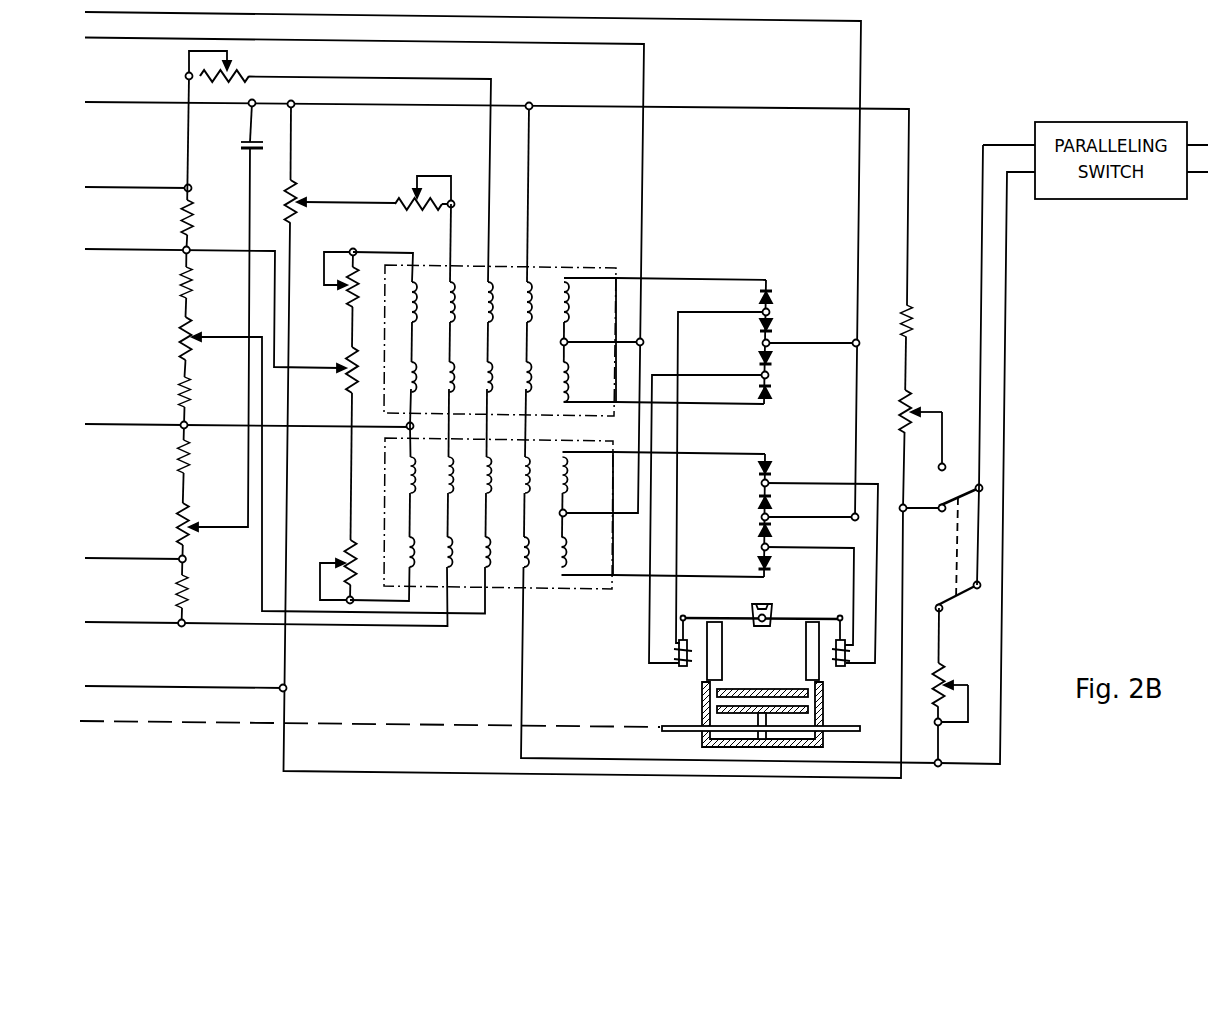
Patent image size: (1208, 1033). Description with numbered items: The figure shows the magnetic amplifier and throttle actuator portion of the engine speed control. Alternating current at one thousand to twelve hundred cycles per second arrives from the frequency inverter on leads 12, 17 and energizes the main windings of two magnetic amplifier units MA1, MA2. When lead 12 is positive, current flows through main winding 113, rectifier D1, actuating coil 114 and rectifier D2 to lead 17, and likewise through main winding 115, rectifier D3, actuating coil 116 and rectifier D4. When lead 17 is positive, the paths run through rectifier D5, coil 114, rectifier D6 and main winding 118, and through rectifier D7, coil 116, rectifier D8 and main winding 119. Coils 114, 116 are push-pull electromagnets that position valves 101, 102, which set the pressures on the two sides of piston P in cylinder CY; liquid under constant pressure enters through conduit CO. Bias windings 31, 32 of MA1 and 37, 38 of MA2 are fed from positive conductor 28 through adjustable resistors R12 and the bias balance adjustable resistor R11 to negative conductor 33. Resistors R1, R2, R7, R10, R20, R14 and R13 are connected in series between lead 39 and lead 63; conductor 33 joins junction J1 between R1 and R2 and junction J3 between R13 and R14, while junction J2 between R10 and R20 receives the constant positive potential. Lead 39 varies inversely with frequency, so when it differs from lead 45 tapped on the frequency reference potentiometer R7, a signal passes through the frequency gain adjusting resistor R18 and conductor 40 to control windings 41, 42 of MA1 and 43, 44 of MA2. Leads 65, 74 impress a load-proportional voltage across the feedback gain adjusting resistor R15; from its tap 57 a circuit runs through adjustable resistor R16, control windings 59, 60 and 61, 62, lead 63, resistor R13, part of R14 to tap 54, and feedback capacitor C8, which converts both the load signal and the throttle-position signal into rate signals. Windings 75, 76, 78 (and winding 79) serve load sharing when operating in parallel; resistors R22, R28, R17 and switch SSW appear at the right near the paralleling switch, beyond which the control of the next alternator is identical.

The lead 17 is at (106, 14).
The lead 12 is at (106, 40).
The lead 65 is at (100, 102).
The conductor 40 is at (298, 78).
The lead 39 is at (100, 188).
The negative conductor 33 is at (100, 250).
The positive conductor 28 is at (95, 425).
The lead 63 is at (95, 623).
The lead 74 is at (95, 688).
The lead 45 is at (206, 337).
The tap 54 is at (206, 527).
The tap 57 is at (312, 205).
The frequency gain adjusting resistor R18 is at (236, 74).
The resistor R1 is at (194, 218).
The junction J1 is at (190, 248).
The resistor R2 is at (194, 284).
The frequency reference potentiometer R7 is at (178, 336).
The resistor R10 is at (193, 396).
The junction J2 is at (188, 424).
The resistor R20 is at (192, 460).
The resistor R14 is at (176, 527).
The junction J3 is at (186, 556).
The resistor R13 is at (190, 594).
The feedback capacitor C8 is at (236, 147).
The feedback gain adjusting resistor R15 is at (297, 190).
The adjustable resistor R16 is at (410, 195).
The adjustable resistor R12 is at (346, 300).
The bias balance adjustable resistor R11 is at (345, 360).
The magnetic amplifier MA1 is at (555, 266).
The magnetic amplifier MA2 is at (553, 590).
The bias winding 32 is at (419, 305).
The control winding 59 is at (457, 305).
The control winding 41 is at (495, 305).
The load sharing signal winding 78 is at (534, 305).
The main winding 118 is at (572, 305).
The bias winding 31 is at (420, 374).
The control winding 60 is at (458, 374).
The control winding 42 is at (496, 374).
The winding 79 is at (535, 374).
The main winding 113 is at (572, 374).
The bias winding 37 is at (417, 477).
The control winding 61 is at (455, 477).
The control winding 43 is at (493, 477).
The load sharing signal winding 76 is at (532, 477).
The main winding 115 is at (570, 477).
The bias winding 38 is at (418, 549).
The control winding 62 is at (456, 549).
The control winding 44 is at (494, 549).
The load sharing signal winding 75 is at (533, 549).
The main winding 119 is at (570, 549).
The rectifier D6 is at (775, 293).
The rectifier D2 is at (775, 327).
The rectifier D5 is at (775, 360).
The rectifier D1 is at (774, 394).
The rectifier D3 is at (773, 470).
The rectifier D7 is at (773, 504).
The rectifier D4 is at (773, 532).
The rectifier D8 is at (773, 565).
The actuating coil 114 is at (680, 668).
The actuating coil 116 is at (846, 668).
The valve 101 is at (723, 672).
The valve 102 is at (806, 640).
The cylinder CY is at (826, 709).
The conduit CO is at (777, 698).
The piston P is at (760, 690).
The resistor R22 is at (912, 322).
The potentiometer R28 is at (911, 396).
The selector switch SSW is at (956, 527).
The potentiometer R17 is at (946, 668).